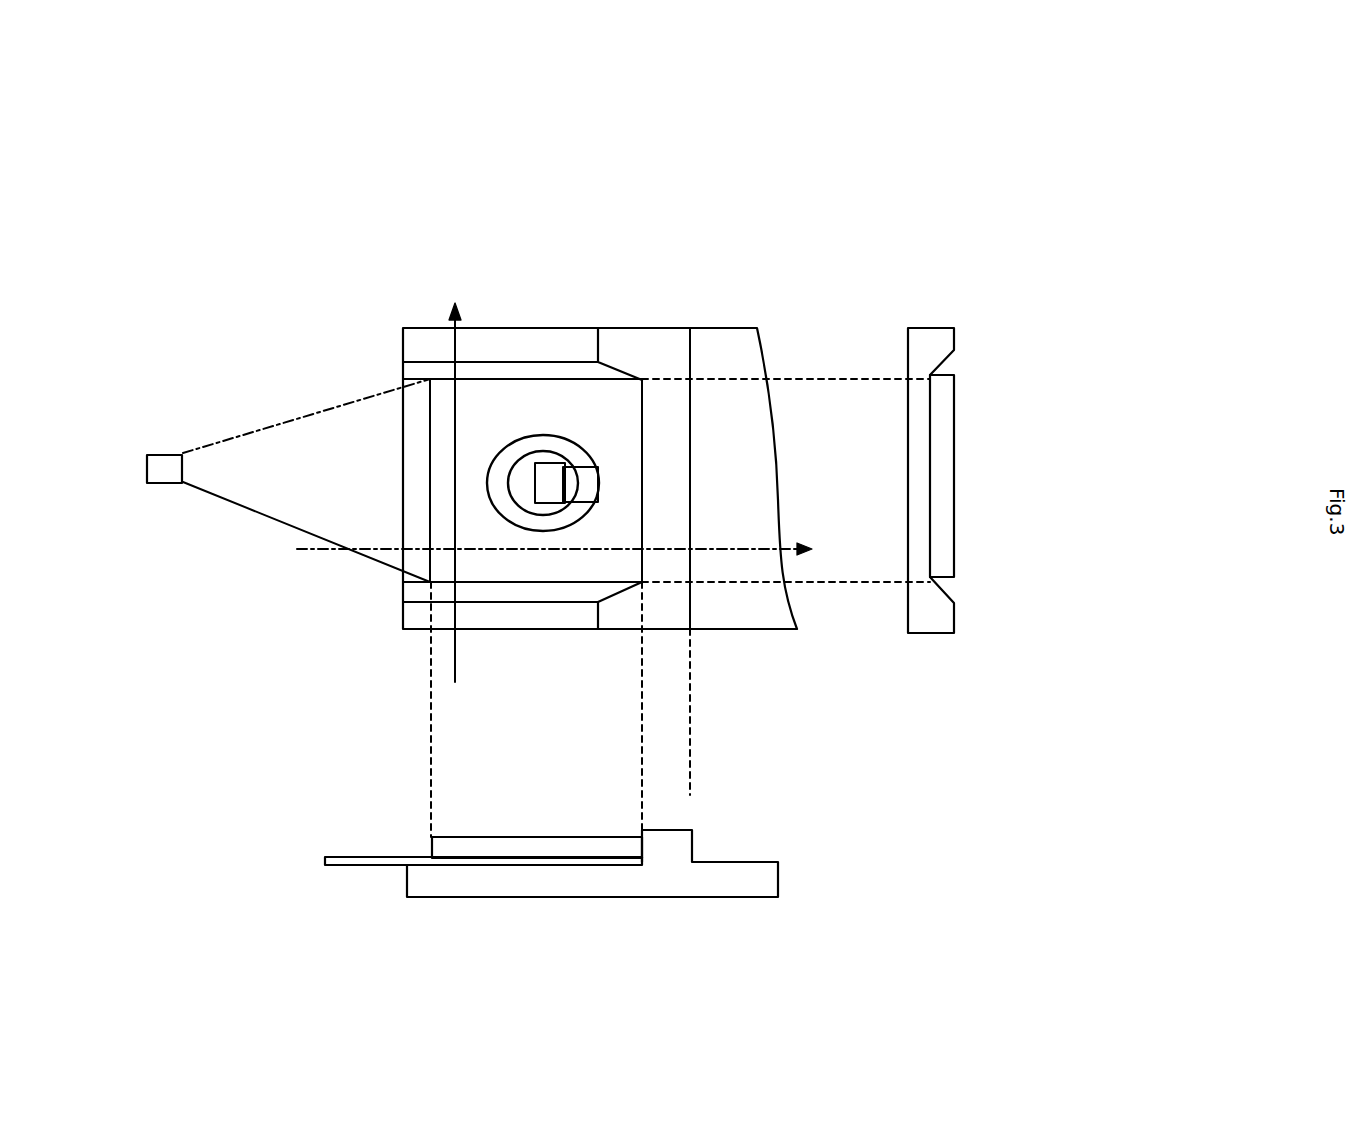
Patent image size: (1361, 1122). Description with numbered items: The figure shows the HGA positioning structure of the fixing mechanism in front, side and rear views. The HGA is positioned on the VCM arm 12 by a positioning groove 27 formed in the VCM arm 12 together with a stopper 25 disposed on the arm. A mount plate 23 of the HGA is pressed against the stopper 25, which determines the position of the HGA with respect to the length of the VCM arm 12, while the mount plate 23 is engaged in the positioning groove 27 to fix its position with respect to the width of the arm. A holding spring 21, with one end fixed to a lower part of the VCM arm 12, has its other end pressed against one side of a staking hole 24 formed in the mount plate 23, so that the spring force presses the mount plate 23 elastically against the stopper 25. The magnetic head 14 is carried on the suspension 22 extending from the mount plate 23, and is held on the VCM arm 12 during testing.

The VCM arm 12 is at (923, 347).
The magnetic head 14 is at (158, 448).
The holding spring 21 is at (548, 477).
The Suspension 22 is at (378, 848).
The mount plate 23 is at (473, 848).
The staking hole 24 is at (517, 482).
The stopper 25 is at (663, 525).
The positioning groove 27 is at (930, 413).